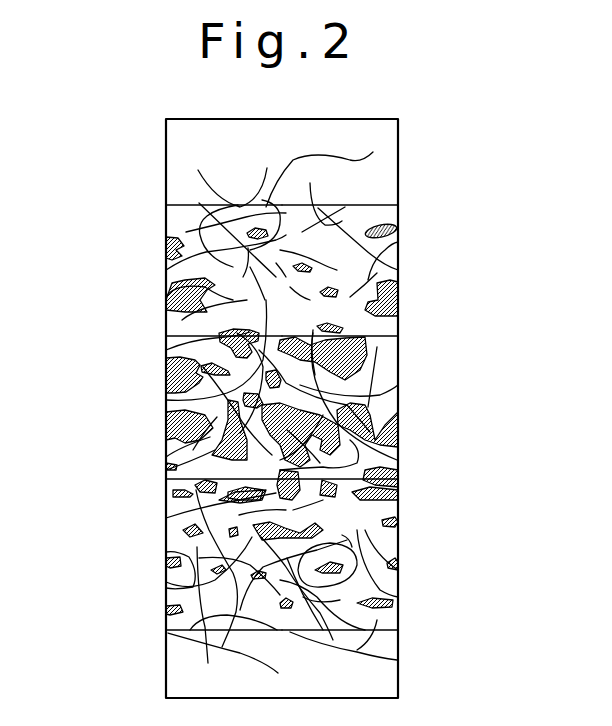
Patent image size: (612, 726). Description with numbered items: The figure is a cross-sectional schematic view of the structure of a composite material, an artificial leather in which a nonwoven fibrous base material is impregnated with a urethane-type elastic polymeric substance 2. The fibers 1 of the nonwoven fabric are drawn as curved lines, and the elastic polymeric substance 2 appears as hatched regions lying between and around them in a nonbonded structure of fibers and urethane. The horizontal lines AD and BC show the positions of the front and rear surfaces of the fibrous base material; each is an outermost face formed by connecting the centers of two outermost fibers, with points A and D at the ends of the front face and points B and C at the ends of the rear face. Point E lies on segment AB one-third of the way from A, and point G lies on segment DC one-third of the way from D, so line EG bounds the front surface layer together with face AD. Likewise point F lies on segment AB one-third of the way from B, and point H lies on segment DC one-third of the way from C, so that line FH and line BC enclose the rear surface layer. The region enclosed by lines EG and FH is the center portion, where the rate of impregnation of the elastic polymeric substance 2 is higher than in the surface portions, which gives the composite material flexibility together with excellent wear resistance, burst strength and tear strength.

The fibers 1 is at (195, 506).
The elastic polymeric substance 2 is at (398, 428).
The point A is at (156, 209).
The point B is at (156, 634).
The point C is at (398, 630).
The point D is at (398, 205).
The point E is at (156, 340).
The point F is at (156, 483).
The point G is at (398, 336).
The point H is at (398, 479).